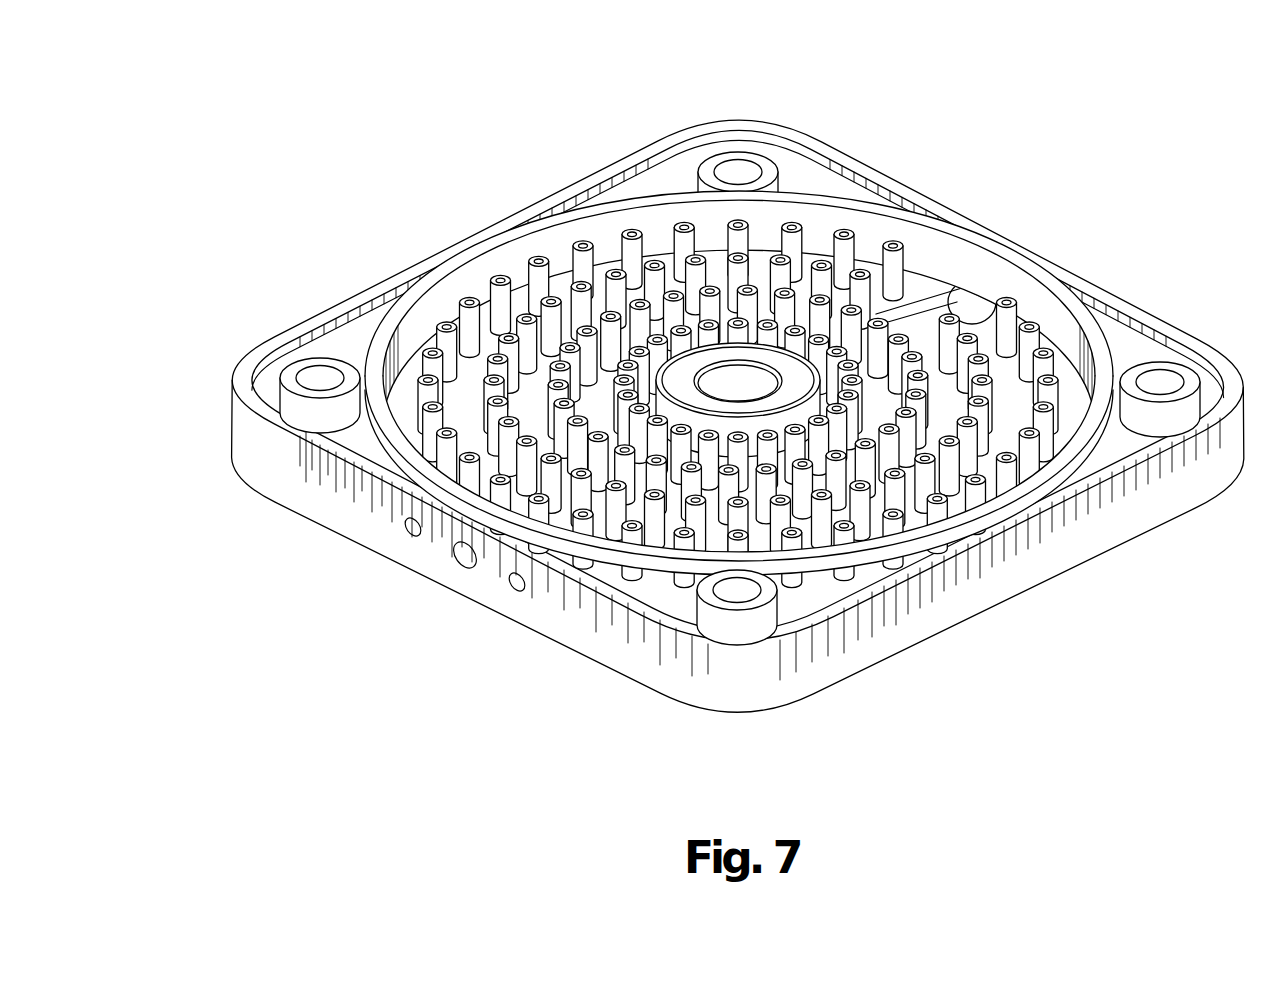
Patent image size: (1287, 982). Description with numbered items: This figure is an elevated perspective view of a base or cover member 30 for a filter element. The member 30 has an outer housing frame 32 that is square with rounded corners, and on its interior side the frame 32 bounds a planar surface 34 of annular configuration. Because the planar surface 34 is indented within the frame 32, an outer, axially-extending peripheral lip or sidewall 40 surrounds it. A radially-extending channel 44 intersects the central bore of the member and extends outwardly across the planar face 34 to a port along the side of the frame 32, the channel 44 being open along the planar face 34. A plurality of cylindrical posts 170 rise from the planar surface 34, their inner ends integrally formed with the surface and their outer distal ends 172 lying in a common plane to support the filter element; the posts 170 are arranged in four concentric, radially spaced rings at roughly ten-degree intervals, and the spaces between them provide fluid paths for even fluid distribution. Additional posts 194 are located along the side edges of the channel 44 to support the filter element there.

The base or cover member 30 is at (1073, 100).
The outer housing frame 32 is at (905, 208).
The planar surface 34 is at (1007, 394).
The peripheral lip or sidewall 40 is at (1048, 464).
The radially-extending channel 44 is at (895, 268).
The posts 170 is at (897, 493).
The outer distal ends 172 is at (501, 279).
The posts along channel 194 is at (826, 362).